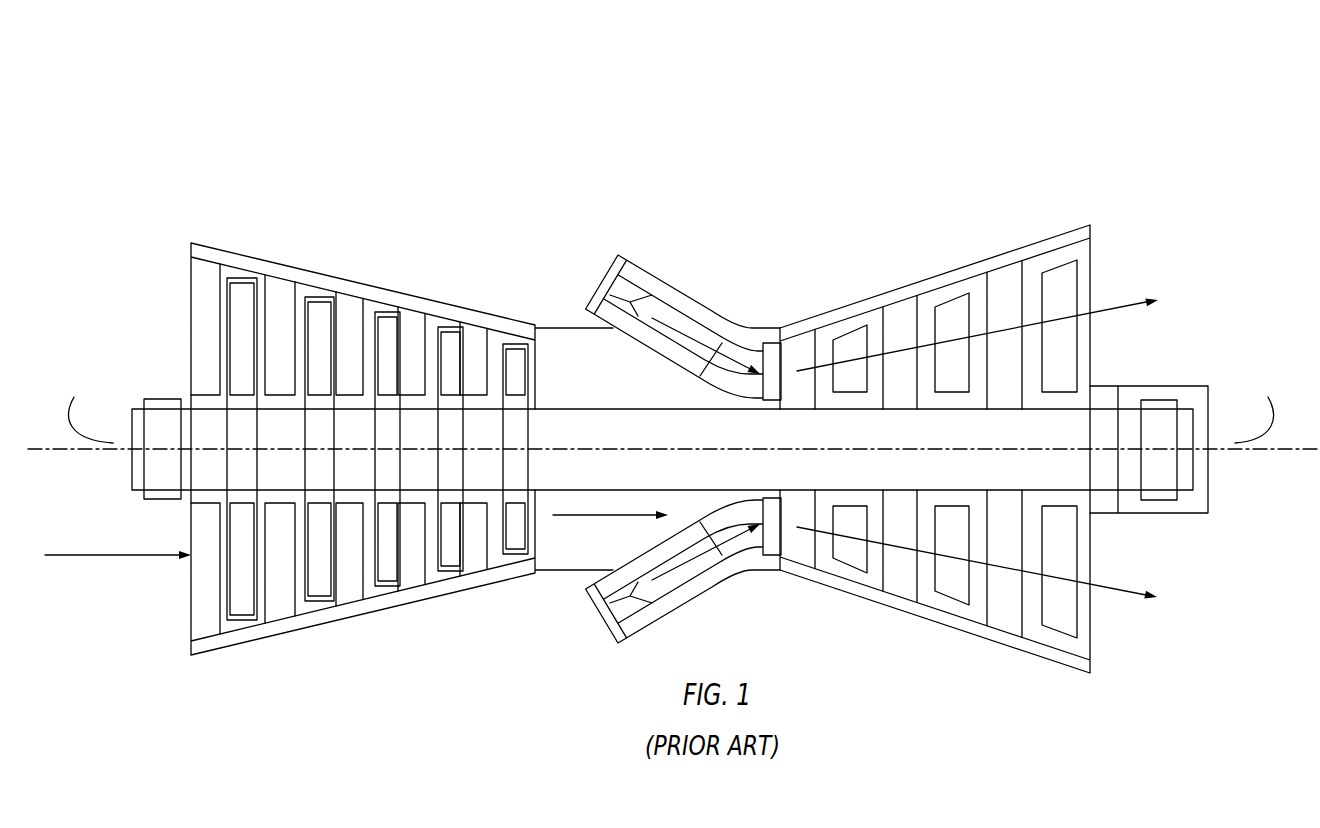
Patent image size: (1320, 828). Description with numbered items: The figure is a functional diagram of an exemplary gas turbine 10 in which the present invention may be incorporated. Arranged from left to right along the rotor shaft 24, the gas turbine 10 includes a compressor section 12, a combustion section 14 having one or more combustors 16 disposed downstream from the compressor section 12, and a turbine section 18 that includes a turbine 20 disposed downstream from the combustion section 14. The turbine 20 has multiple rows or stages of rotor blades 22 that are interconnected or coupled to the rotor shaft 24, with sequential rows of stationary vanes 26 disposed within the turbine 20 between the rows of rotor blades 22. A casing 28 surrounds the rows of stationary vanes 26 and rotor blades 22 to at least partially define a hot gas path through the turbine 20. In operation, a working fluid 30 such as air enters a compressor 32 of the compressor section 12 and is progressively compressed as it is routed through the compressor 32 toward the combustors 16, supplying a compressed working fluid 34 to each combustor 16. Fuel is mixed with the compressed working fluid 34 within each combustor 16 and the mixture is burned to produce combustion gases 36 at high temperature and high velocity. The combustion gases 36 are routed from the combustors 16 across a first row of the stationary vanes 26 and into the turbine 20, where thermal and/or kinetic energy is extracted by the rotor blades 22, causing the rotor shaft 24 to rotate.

The gas turbine 10 is at (590, 92).
The compressor section 12 is at (538, 300).
The combustion section 14 is at (783, 322).
The combustor 16 is at (648, 252).
The turbine section 18 is at (787, 322).
The turbine 20 is at (905, 280).
The rotor blades 22 is at (950, 588).
The rotor shaft 24 is at (917, 437).
The stationary vanes 26 is at (805, 350).
The casing 28 is at (860, 563).
The working fluid 30 is at (62, 554).
The compressor 32 is at (312, 266).
The compressed working fluid 34 is at (556, 516).
The combustion gases 36 is at (673, 330).